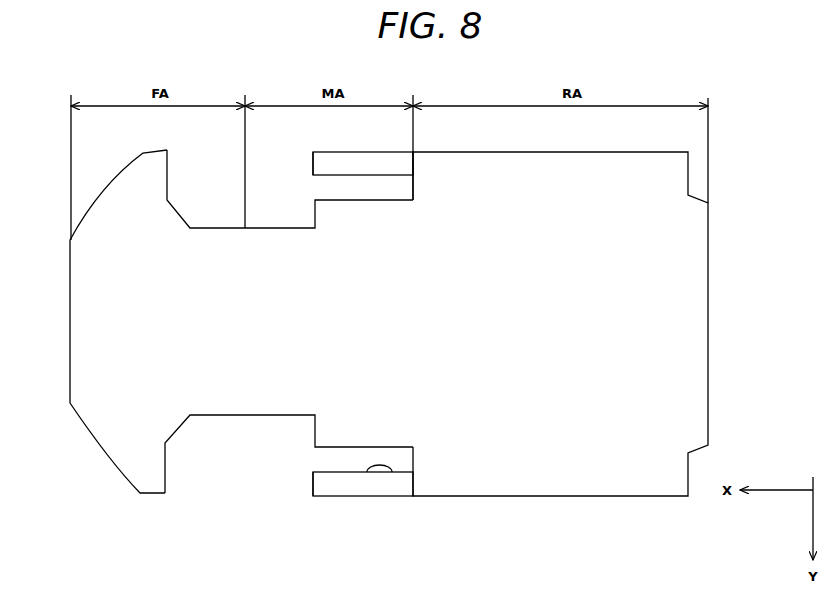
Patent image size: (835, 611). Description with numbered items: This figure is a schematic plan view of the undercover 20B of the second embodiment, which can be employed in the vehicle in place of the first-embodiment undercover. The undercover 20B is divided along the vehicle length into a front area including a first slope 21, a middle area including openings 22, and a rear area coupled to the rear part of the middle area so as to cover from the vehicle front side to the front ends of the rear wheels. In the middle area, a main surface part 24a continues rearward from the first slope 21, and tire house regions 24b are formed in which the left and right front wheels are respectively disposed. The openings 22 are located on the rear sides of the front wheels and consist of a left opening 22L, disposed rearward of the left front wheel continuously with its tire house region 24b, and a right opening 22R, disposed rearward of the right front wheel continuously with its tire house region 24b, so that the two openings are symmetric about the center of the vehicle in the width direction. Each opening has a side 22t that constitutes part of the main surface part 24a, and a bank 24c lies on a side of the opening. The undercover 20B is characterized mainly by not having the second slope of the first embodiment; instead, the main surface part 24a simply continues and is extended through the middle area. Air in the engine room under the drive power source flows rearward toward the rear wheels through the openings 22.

The undercover 20B is at (808, 87).
The first slope 21 is at (125, 313).
The openings 22 is at (363, 342).
The left opening 22L is at (352, 188).
The right opening 22R is at (341, 462).
The side of the opening 22t is at (336, 168).
The main surface part 24a is at (273, 318).
The tire house regions 24b is at (289, 321).
The bank 24c is at (330, 157).